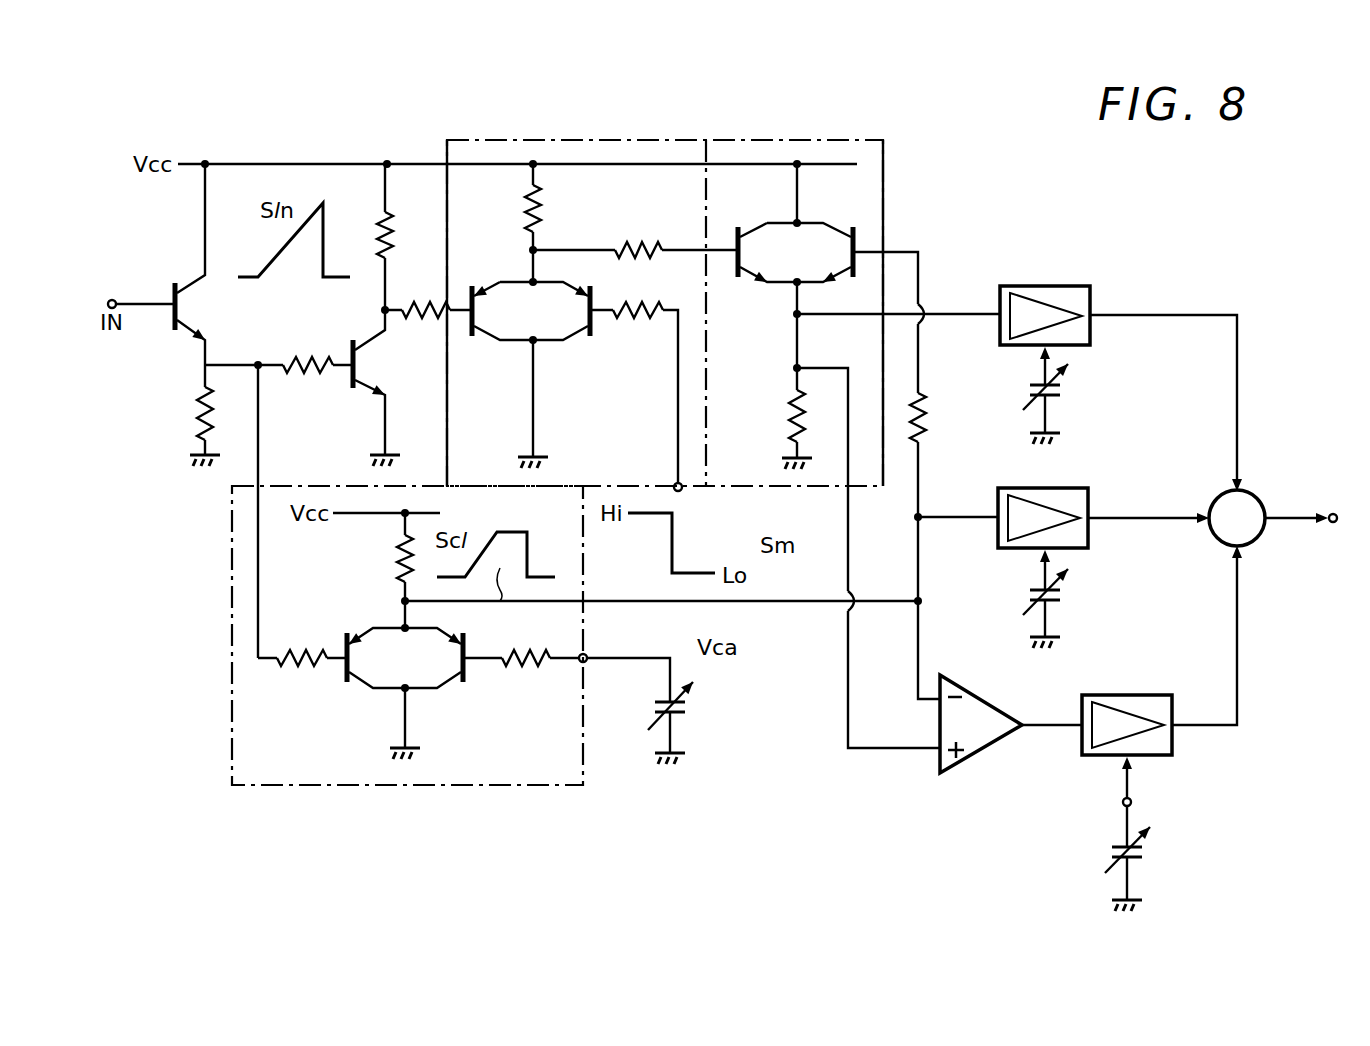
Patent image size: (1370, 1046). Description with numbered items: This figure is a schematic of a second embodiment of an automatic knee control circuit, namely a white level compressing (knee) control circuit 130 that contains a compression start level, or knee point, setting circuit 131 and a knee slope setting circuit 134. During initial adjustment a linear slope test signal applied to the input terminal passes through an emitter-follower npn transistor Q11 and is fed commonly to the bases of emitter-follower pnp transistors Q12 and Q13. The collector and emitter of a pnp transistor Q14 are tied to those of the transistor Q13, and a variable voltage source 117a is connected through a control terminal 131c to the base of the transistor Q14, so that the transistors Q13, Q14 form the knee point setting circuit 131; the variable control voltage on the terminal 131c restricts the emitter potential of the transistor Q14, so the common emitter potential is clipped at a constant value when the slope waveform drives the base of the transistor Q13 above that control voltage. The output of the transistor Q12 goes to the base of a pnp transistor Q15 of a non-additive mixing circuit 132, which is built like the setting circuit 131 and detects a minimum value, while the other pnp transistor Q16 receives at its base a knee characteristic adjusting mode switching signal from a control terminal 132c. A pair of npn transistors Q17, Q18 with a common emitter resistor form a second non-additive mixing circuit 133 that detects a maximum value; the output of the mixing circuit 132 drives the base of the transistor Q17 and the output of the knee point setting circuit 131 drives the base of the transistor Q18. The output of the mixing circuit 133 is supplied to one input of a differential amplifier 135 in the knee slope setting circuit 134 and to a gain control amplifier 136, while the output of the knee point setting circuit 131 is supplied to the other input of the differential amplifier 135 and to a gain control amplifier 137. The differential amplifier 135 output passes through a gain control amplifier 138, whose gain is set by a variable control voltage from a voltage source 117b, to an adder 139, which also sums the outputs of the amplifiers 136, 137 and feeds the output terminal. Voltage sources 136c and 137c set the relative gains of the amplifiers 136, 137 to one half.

The white level compressing (knee) control circuit 130 is at (736, 108).
The compression start level (knee point) setting circuit 131 is at (232, 738).
The non-additive mixing (NAM) circuit 132 is at (447, 138).
The second non-additive mixing (NAM) circuit 133 is at (883, 140).
The knee slope setting circuit 134 is at (1094, 216).
The differential amplifier 135 is at (980, 757).
The gain control amplifier 136 is at (1090, 340).
The voltage source 136c is at (1060, 392).
The gain control amplifier 137 is at (1088, 542).
The voltage source 137c is at (1060, 596).
The gain control amplifier 138 is at (1172, 748).
The adder 139 is at (1258, 500).
The control terminal 131c is at (586, 655).
The control terminal 132c is at (682, 490).
The variable voltage source 117a is at (685, 705).
The voltage source 117b is at (1142, 850).
The emitter-follower npn transistor Q11 is at (180, 303).
The emitter-follower pnp transistor Q12 is at (356, 365).
The emitter-follower pnp transistor Q13 is at (347, 684).
The pnp transistor Q14 is at (463, 684).
The pnp transistor Q15 is at (472, 338).
The pnp transistor Q16 is at (590, 338).
The npn transistor Q17 is at (738, 280).
The npn transistor Q18 is at (853, 225).